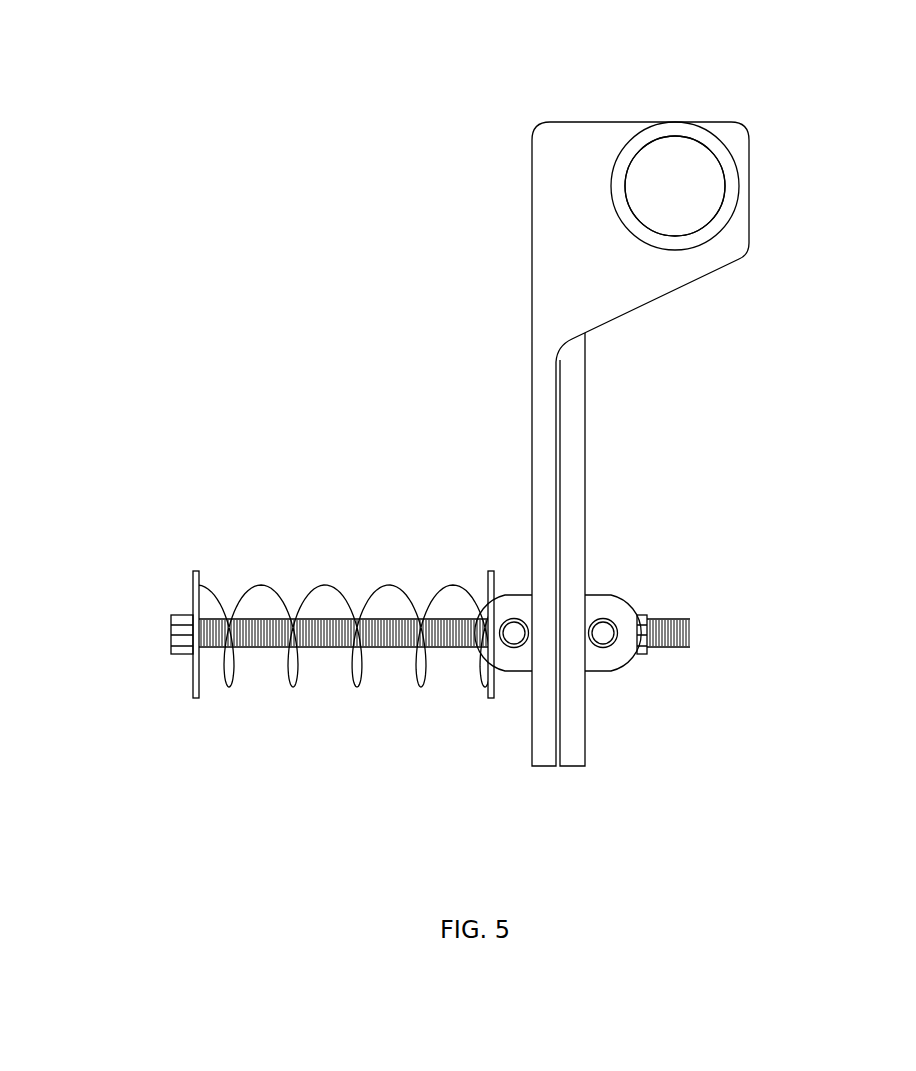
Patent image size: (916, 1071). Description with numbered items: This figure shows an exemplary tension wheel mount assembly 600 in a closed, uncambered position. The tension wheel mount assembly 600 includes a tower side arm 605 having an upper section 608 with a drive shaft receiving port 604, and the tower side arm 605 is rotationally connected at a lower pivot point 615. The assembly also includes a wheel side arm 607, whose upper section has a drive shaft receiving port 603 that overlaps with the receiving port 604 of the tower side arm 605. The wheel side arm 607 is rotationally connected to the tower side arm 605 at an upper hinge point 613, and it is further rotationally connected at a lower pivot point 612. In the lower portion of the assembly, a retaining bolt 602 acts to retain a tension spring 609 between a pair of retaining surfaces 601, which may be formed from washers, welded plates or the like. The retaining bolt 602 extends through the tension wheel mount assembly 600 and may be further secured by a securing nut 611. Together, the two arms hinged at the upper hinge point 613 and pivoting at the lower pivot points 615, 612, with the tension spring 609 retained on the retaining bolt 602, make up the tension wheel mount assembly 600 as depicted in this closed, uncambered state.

The tension wheel mount assembly 600 is at (428, 94).
The retaining surfaces 601 is at (490, 571).
The retaining bolt 602 is at (185, 640).
The drive shaft receiving port 603 is at (695, 177).
The drive shaft receiving port 604 is at (703, 142).
The tower side arm 605 is at (543, 434).
The wheel side arm 607 is at (570, 450).
The upper section 608 is at (552, 242).
The tension spring 609 is at (289, 673).
The securing nut 611 is at (642, 650).
The lower pivot point 612 is at (603, 643).
The upper hinge point 613 is at (657, 135).
The lower pivot point 615 is at (515, 647).